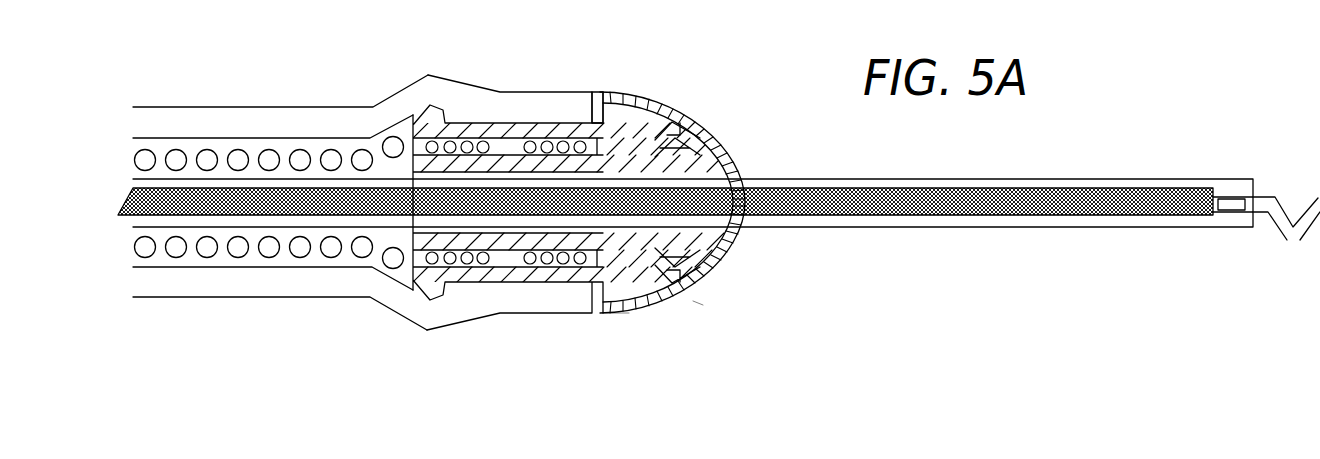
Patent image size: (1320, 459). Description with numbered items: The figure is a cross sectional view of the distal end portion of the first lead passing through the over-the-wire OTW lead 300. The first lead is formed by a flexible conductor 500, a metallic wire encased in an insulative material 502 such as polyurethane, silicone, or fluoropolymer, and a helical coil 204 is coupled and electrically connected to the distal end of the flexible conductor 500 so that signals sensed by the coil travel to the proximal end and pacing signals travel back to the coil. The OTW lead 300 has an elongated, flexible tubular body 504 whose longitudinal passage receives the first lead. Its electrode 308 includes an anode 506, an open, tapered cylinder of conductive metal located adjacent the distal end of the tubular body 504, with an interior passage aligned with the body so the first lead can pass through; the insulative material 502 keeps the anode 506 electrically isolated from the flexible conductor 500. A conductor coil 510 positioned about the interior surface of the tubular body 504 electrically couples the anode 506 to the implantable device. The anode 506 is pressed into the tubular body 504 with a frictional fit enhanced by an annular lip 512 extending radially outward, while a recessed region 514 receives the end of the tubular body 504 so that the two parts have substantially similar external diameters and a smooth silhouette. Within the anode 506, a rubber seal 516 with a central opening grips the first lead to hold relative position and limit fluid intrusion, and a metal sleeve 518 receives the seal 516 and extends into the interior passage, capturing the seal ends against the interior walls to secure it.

The helical coil 204 is at (1285, 243).
The OTW lead 300 is at (693, 301).
The electrode 308 is at (629, 322).
The flexible conductor 500 is at (1130, 190).
The insulative material 502 is at (1073, 180).
The tubular body 504 is at (428, 332).
The anode 506 is at (672, 97).
The conductor coil 510 is at (267, 250).
The annular lip 512 is at (470, 122).
The recessed region 514 is at (597, 91).
The rubber seal 516 is at (720, 262).
The metal sleeve 518 is at (735, 150).